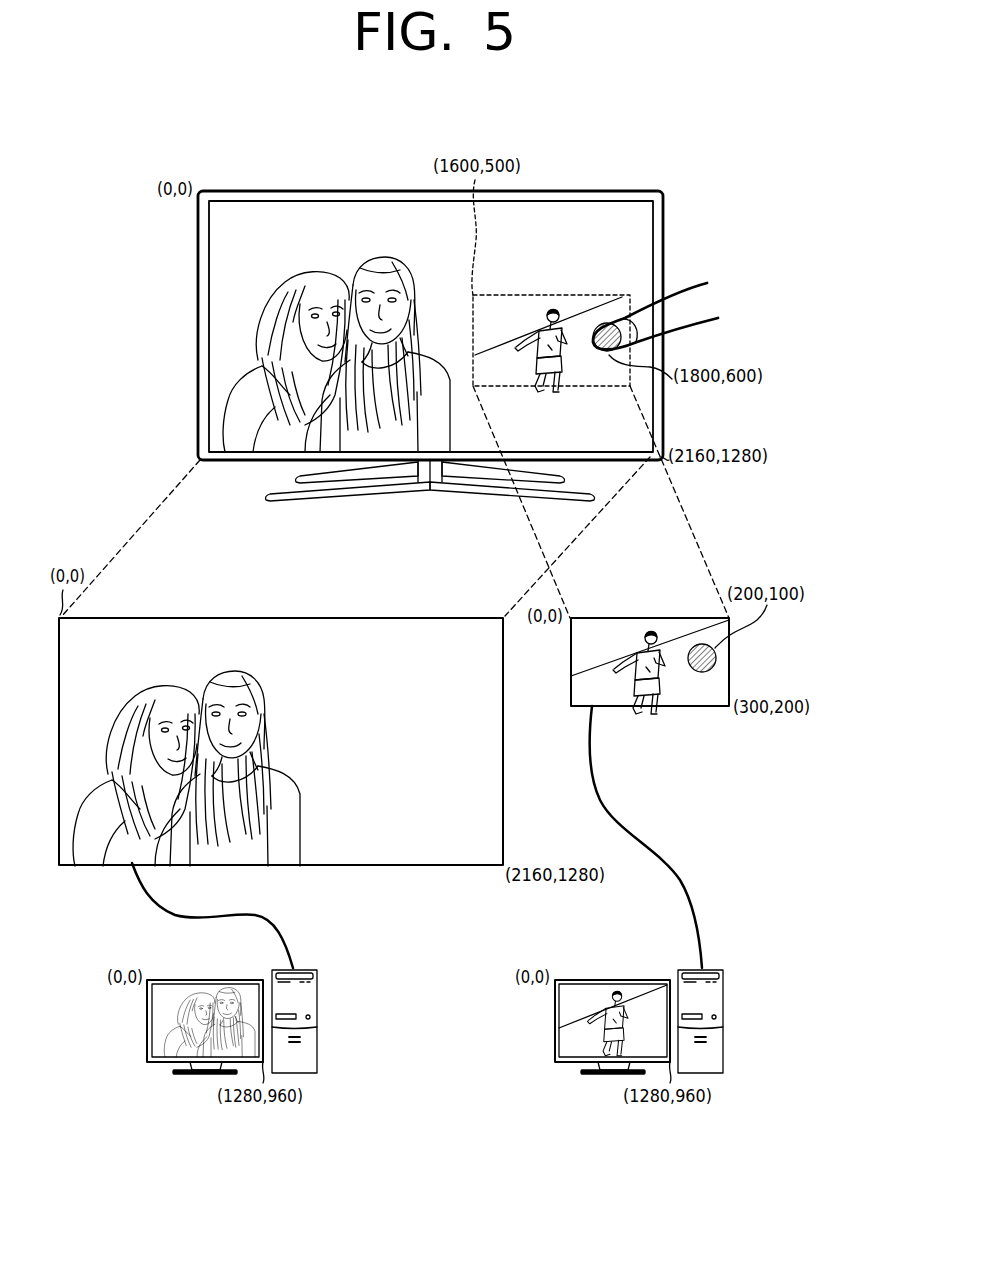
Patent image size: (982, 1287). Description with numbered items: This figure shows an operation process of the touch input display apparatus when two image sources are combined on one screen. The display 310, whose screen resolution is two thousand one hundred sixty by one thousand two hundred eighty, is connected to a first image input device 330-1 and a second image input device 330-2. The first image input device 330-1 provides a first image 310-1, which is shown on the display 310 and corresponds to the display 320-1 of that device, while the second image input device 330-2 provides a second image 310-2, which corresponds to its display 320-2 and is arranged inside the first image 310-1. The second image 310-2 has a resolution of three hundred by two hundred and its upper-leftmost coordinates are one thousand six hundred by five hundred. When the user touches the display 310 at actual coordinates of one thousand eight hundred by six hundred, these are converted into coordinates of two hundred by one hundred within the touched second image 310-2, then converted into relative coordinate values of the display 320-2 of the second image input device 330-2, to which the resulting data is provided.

The display 310 is at (642, 191).
The first image 310-1 is at (242, 212).
The second image 310-2 is at (580, 295).
The display of first image input device 320-1 is at (169, 980).
The display of second image input device 320-2 is at (578, 980).
The first image input device 330-1 is at (317, 1038).
The second image input device 330-2 is at (723, 1038).